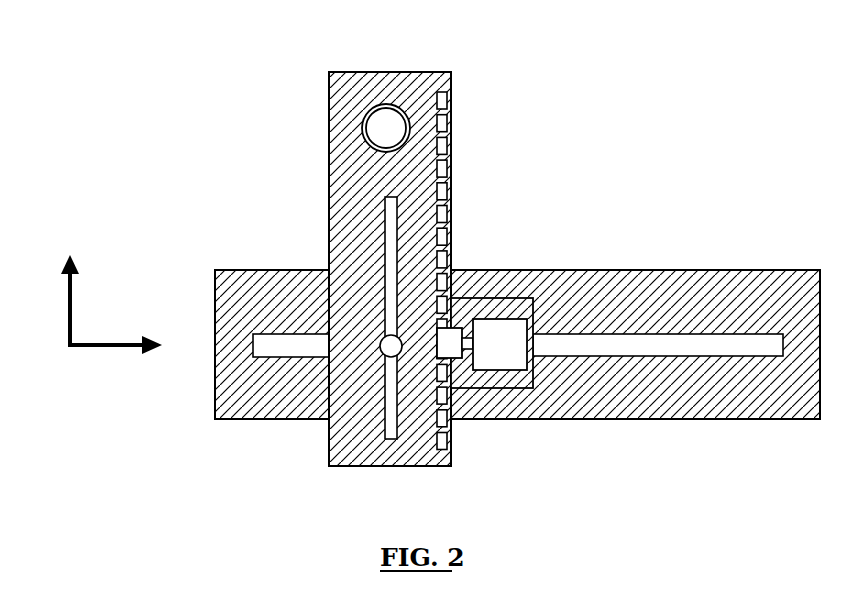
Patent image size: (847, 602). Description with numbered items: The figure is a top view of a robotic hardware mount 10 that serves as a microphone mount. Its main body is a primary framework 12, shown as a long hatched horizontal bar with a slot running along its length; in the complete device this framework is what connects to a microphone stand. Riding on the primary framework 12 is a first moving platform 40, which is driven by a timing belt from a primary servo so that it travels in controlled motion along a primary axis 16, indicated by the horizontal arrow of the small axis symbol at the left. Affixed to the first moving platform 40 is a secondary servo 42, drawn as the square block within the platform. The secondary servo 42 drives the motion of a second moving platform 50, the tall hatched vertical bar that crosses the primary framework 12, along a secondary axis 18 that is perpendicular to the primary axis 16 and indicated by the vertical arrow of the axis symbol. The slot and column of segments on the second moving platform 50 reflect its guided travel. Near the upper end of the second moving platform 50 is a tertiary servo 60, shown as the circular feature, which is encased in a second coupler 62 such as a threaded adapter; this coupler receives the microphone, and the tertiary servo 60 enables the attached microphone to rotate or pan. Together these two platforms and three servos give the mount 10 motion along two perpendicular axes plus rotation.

The hardware mount 10 is at (232, 156).
The primary framework 12 is at (703, 268).
The primary axis 16 is at (112, 350).
The secondary axis 18 is at (68, 303).
The first moving platform 40 is at (492, 298).
The secondary servo 42 is at (510, 375).
The second moving platform 50 is at (330, 443).
The tertiary servo 60 is at (363, 120).
The second coupler 62 is at (385, 104).